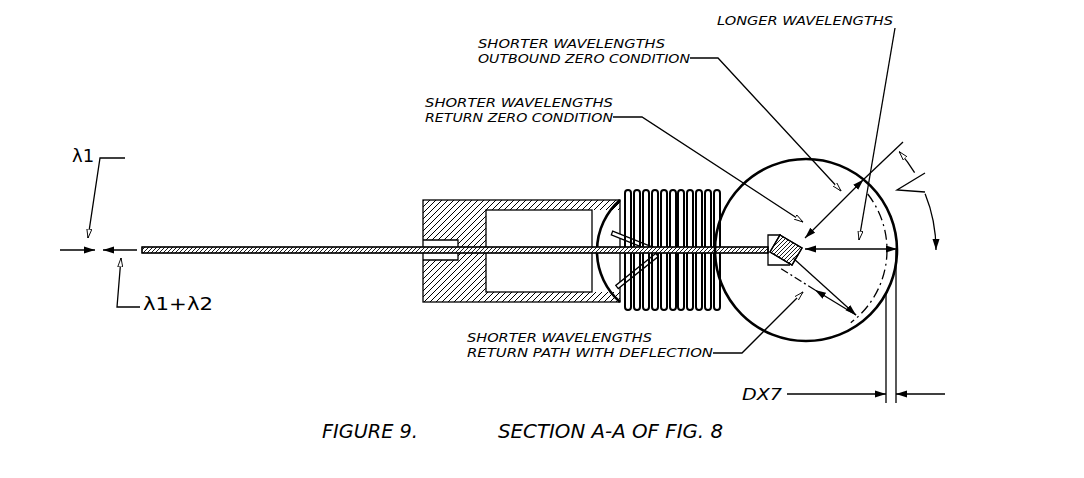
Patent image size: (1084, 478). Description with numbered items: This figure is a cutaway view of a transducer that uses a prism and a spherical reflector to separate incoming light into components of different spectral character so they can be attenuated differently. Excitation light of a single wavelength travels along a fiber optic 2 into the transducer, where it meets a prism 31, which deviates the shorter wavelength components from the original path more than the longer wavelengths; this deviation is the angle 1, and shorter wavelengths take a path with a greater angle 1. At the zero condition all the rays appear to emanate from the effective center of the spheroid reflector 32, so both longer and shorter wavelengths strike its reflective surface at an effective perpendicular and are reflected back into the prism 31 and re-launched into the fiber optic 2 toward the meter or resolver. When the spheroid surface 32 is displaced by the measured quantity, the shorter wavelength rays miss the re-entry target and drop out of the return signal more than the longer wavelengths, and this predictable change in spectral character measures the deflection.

The deviation angle 1 is at (921, 201).
The optical fiber 2 is at (253, 242).
The reflector holder 31 is at (770, 237).
The ball lens 32 is at (785, 157).